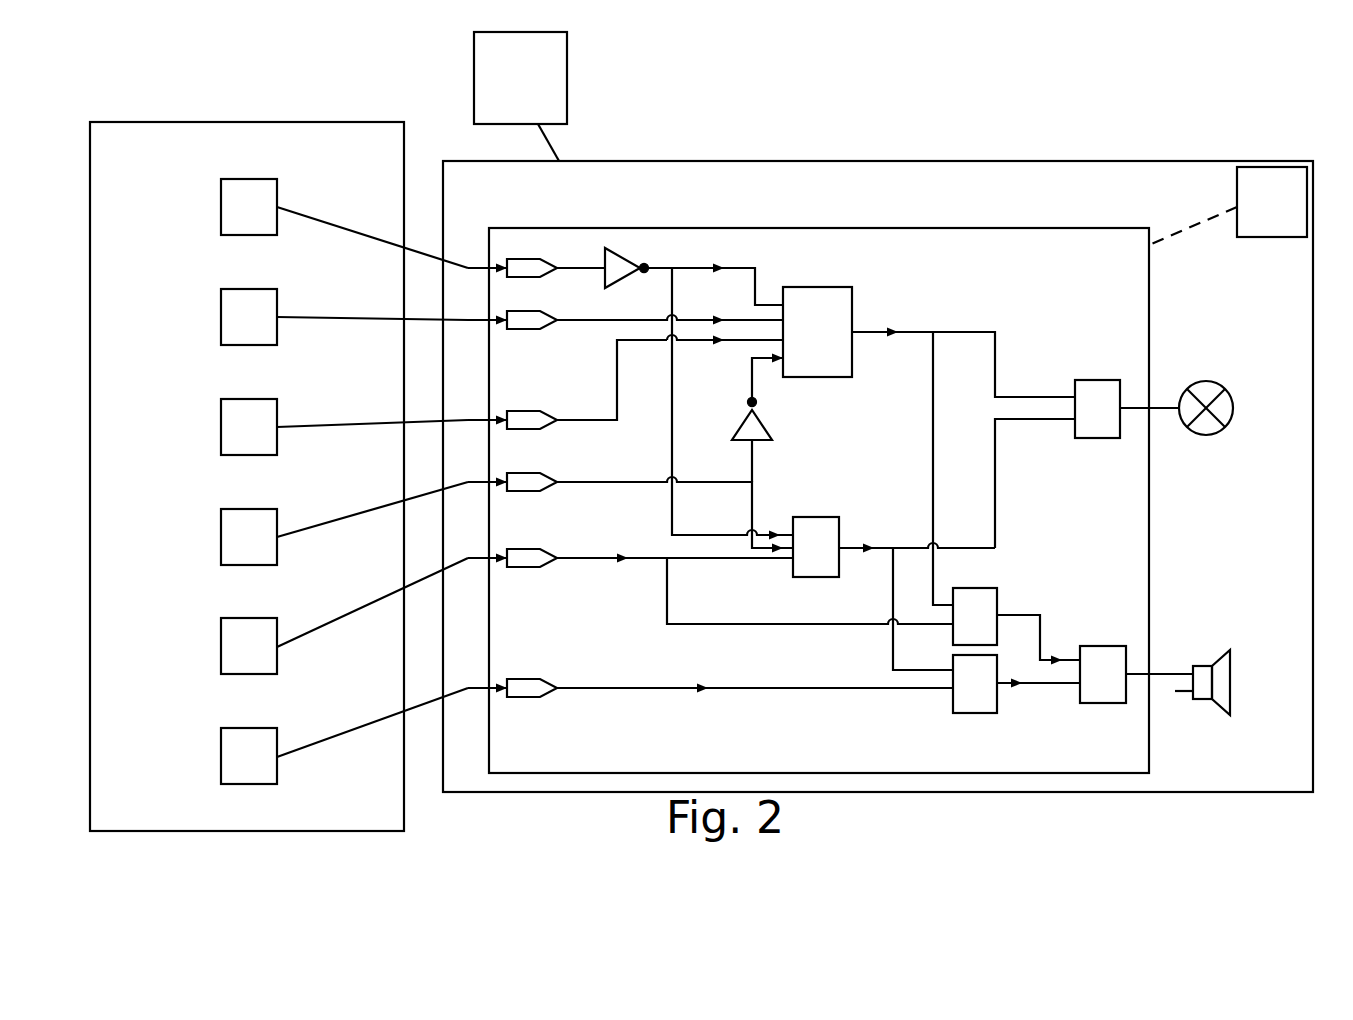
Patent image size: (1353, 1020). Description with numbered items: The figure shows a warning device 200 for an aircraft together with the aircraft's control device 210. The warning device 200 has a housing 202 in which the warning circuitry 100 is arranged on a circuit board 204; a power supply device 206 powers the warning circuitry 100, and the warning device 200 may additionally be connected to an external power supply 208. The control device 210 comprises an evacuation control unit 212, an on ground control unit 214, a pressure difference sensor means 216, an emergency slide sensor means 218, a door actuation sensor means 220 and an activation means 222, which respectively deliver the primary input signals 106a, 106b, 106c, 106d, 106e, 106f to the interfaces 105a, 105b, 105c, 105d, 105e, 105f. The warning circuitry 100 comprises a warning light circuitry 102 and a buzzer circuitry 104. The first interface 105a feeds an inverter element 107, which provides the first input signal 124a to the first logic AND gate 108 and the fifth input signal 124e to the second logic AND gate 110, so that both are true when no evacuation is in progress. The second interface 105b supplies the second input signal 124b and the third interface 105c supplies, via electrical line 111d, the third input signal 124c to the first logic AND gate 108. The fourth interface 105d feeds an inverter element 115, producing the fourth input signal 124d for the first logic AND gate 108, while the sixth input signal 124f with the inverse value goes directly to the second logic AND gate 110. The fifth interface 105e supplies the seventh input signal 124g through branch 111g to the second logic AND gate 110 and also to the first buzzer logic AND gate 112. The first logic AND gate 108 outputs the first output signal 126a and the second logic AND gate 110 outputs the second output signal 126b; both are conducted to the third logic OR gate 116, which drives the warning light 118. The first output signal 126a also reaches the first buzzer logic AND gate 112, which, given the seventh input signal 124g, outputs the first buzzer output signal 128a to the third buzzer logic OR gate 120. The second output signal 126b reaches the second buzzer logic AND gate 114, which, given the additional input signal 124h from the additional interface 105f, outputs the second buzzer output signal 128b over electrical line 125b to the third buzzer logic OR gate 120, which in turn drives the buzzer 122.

The warning circuitry 100 is at (820, 474).
The warning light circuitry 102 is at (1032, 520).
The buzzer circuitry 104 is at (1035, 603).
The first interface 105a is at (532, 262).
The second interface 105b is at (532, 314).
The third interface 105c is at (532, 414).
The fourth interface 105d is at (532, 476).
The fifth interface 105e is at (532, 552).
The additional interface 105f is at (532, 682).
The first primary input signal 106a is at (480, 266).
The second primary input signal 106b is at (480, 318).
The third primary input signal 106c is at (480, 418).
The fourth primary input signal 106d is at (480, 480).
The fifth primary input signal 106e is at (480, 556).
The additional primary input signal 106f is at (480, 686).
The inverter element 107 is at (620, 248).
The first logic AND gate 108 is at (842, 287).
The second logic AND gate 110 is at (830, 517).
The electrical line 111d is at (617, 375).
The branch 111g is at (712, 560).
The first buzzer logic AND gate 112 is at (990, 588).
The second buzzer logic AND gate 114 is at (975, 713).
The inverter element 115 is at (772, 438).
The third logic OR gate 116 is at (1098, 380).
The warning light 118 is at (1210, 382).
The third buzzer logic OR gate 120 is at (1095, 703).
The buzzer 122 is at (1232, 665).
The first input signal 124a is at (722, 266).
The second input signal 124b is at (720, 318).
The third input signal 124c is at (716, 348).
The fourth input signal 124d is at (772, 365).
The fifth input signal 124e is at (775, 530).
The sixth input signal 124f is at (778, 560).
The seventh input signal 124g is at (621, 550).
The additional input signal 124h is at (700, 682).
The electrical line 125b is at (1045, 686).
The first output signal 126a is at (890, 326).
The second output signal 126b is at (866, 560).
The first buzzer output signal 128a is at (1053, 656).
The second buzzer output signal 128b is at (1012, 680).
The warning device 200 is at (1022, 128).
The housing 202 is at (678, 161).
The circuit board 204 is at (906, 228).
The power supply device 206 is at (1283, 167).
The external power supply 208 is at (474, 57).
The control device 210 is at (227, 122).
The evacuation control unit 212 is at (221, 208).
The on ground control unit 214 is at (221, 318).
The pressure difference sensor means 216 is at (221, 428).
The emergency slide sensor means 218 is at (221, 538).
The sensor means 220 is at (221, 647).
The activation means 222 is at (221, 756).